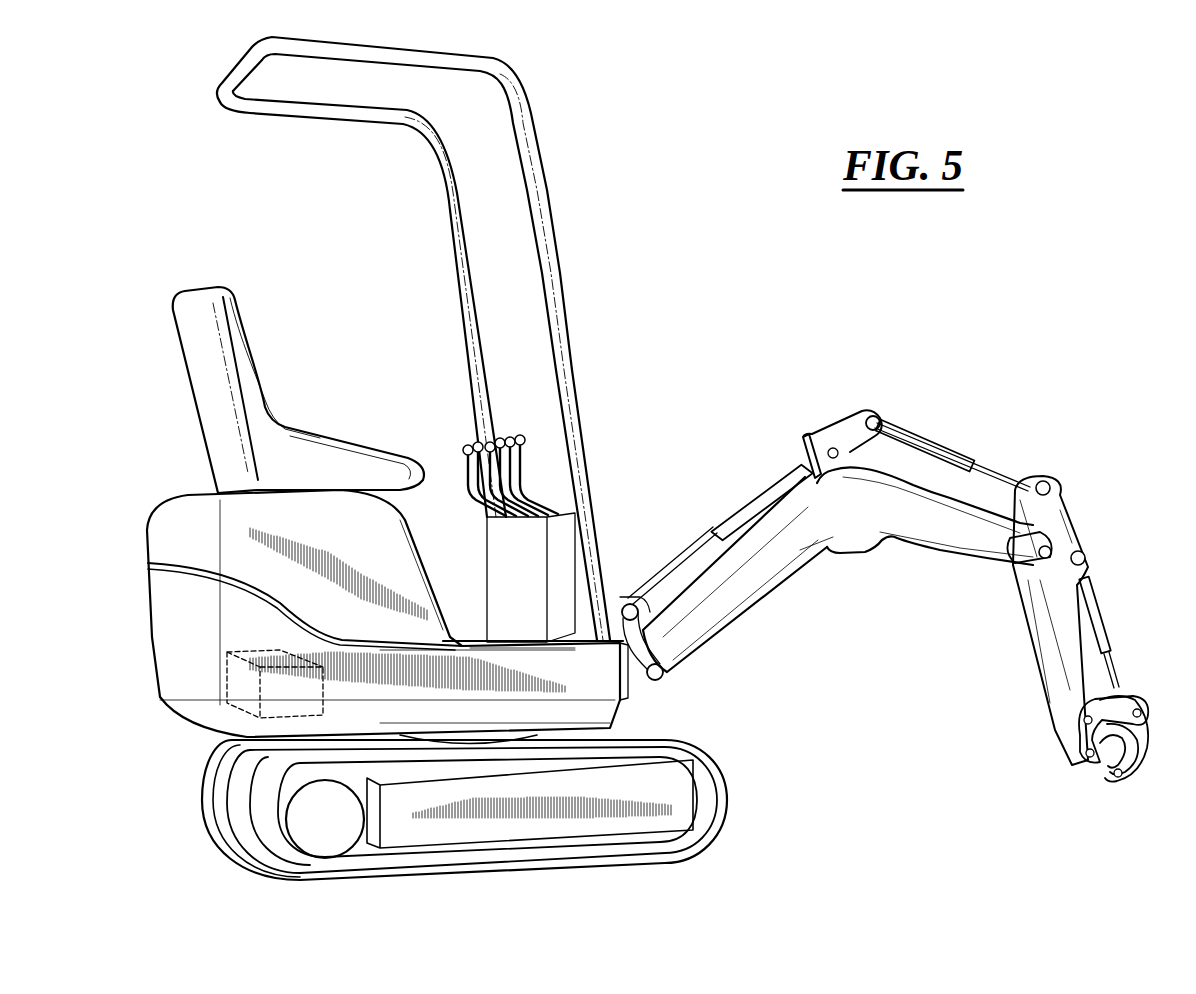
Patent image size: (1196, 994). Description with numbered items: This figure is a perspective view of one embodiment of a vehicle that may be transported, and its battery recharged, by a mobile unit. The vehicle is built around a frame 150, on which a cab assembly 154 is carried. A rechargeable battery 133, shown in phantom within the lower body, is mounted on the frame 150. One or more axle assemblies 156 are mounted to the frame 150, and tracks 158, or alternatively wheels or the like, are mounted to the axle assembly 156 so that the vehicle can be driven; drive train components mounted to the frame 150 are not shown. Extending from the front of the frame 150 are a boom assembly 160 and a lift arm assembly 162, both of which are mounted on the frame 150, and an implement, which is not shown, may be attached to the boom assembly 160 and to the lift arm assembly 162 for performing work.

The rechargeable battery 133 is at (240, 655).
The frame 150 is at (510, 665).
The cab assembly 154 is at (250, 57).
The axle assembly 156 is at (323, 820).
The tracks 158 is at (272, 823).
The boom assembly 160 is at (830, 463).
The lift arm assembly 162 is at (850, 487).